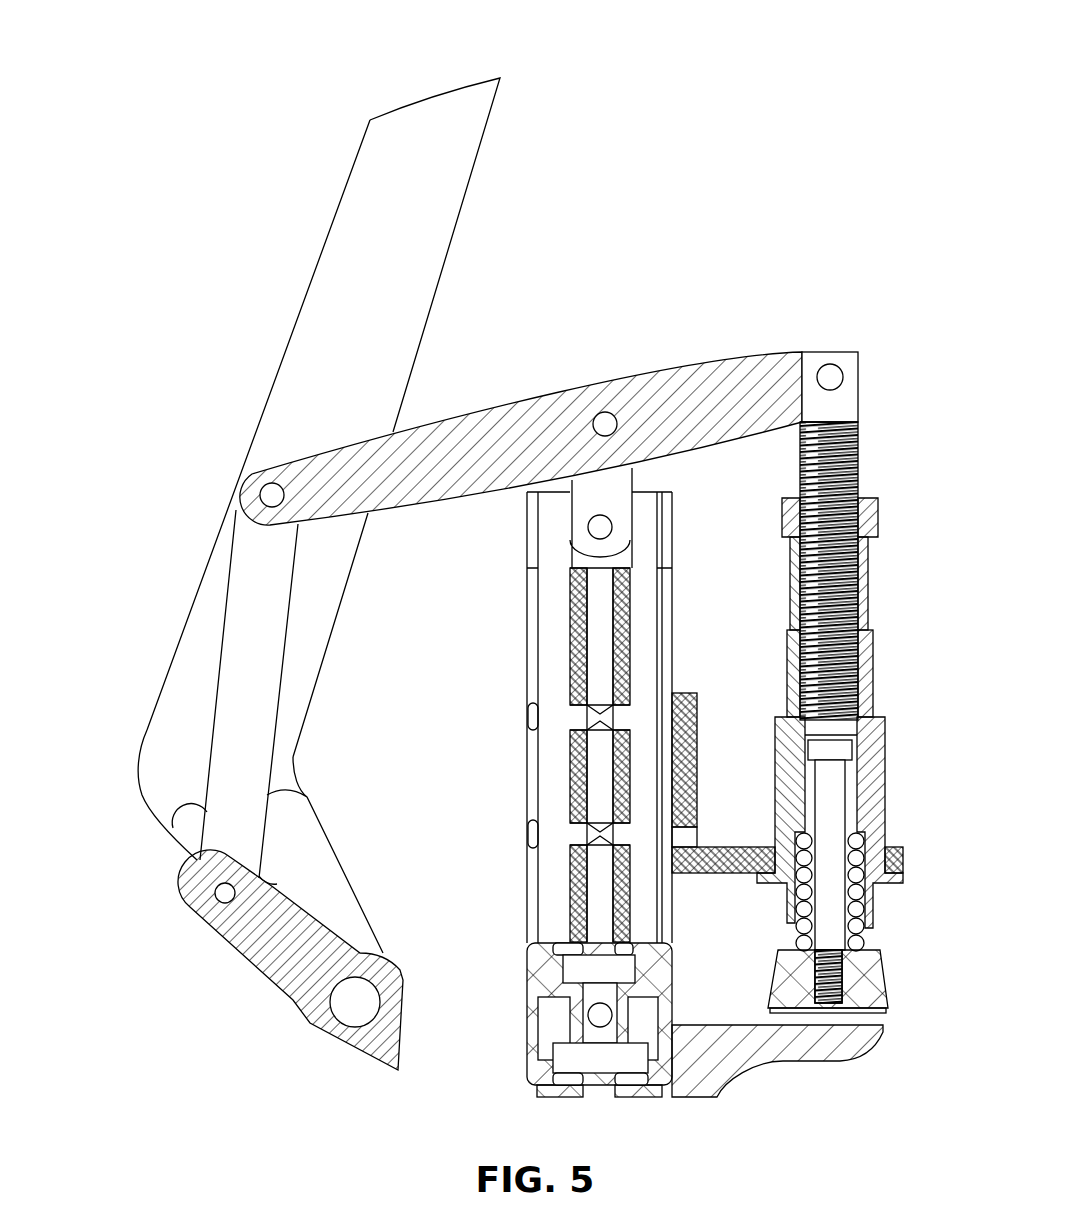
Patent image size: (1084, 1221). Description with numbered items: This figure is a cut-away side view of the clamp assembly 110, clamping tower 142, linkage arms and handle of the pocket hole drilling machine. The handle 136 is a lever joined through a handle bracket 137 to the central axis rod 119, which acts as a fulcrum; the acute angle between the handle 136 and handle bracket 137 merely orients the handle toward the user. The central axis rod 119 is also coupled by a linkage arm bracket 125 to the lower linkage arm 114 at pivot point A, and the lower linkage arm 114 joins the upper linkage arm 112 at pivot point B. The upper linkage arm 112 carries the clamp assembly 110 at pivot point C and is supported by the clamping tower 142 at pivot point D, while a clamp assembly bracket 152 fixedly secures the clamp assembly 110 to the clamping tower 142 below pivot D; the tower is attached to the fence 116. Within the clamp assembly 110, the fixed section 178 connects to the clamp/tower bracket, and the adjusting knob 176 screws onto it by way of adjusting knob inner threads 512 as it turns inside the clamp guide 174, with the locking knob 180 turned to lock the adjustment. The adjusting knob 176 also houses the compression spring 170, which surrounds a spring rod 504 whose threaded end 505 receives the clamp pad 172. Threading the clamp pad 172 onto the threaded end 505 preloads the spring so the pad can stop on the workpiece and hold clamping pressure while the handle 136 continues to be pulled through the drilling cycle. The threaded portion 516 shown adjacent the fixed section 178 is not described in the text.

The clamp assembly 110 is at (876, 341).
The upper linkage arm 112 is at (512, 428).
The lower linkage arm 114 is at (242, 625).
The fence 116 is at (527, 1013).
The central axis rod 119 is at (347, 1012).
The linkage arm bracket 125 is at (253, 953).
The handle 136 is at (332, 222).
The handle bracket 137 is at (318, 851).
The clamping tower 142 is at (527, 763).
The clamp assembly bracket 152 is at (727, 873).
The compression spring 170 is at (856, 913).
The clamp pad 172 is at (880, 1012).
The clamp guide 174 is at (885, 762).
The adjusting knob 176 is at (874, 663).
The fixed section 178 is at (860, 427).
The locking knob 180 is at (878, 517).
The spring rod 504 is at (828, 804).
The threaded end 505 is at (800, 955).
The adjusting knob inner threads 512 is at (866, 601).
The threaded rod 516 is at (860, 462).